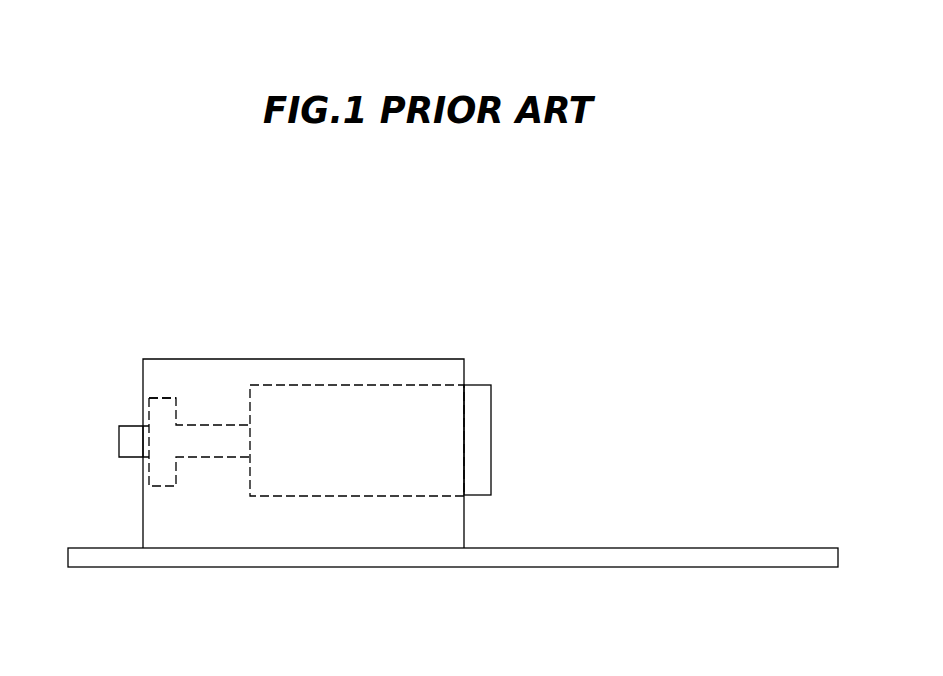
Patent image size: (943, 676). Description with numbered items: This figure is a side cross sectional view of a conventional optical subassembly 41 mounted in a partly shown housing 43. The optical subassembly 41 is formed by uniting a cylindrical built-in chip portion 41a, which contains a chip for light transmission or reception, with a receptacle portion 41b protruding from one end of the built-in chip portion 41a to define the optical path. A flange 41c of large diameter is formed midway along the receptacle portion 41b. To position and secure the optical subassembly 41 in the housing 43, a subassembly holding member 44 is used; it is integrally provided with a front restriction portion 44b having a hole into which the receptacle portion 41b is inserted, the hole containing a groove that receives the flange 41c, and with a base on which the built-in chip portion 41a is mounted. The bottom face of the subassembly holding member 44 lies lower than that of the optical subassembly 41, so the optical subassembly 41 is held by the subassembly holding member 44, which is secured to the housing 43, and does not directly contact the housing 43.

The optical subassembly 41 is at (481, 385).
The built-in chip portion 41a is at (491, 418).
The receptacle portion 41b is at (203, 425).
The flange 41c is at (160, 398).
The housing 43 is at (702, 548).
The subassembly holding member 44 is at (340, 359).
The front restriction portion 44b is at (173, 511).